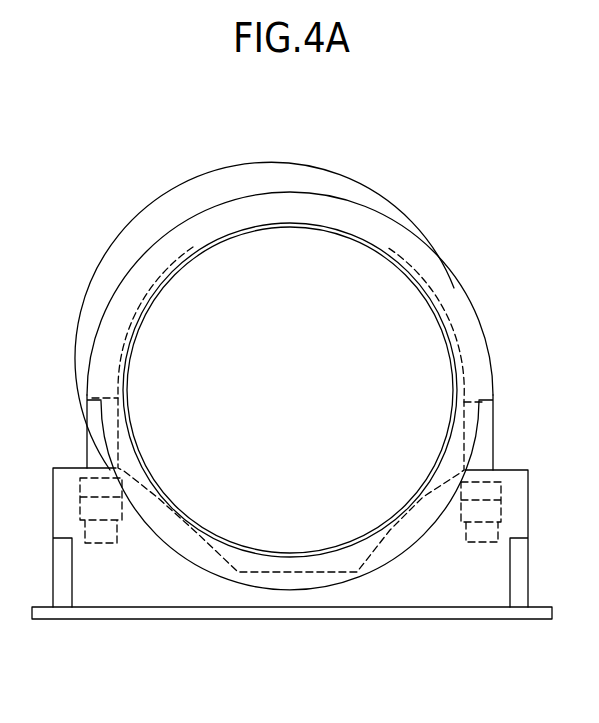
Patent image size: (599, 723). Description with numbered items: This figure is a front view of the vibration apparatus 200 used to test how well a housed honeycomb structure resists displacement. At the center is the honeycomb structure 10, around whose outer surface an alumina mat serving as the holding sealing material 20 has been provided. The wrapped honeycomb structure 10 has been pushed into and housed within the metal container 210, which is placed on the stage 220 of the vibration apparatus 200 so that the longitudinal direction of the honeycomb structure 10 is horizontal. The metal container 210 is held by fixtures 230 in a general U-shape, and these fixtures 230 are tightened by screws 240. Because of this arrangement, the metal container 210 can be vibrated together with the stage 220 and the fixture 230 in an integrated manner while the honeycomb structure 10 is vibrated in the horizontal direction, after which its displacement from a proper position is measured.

The vibration apparatus 200 is at (272, 168).
The honeycomb structure 10 is at (407, 357).
The holding sealing material 20 is at (353, 543).
The metal container 210 is at (390, 563).
The stage 220 is at (280, 572).
The fixture 230 is at (103, 317).
The screw 240 is at (122, 512).